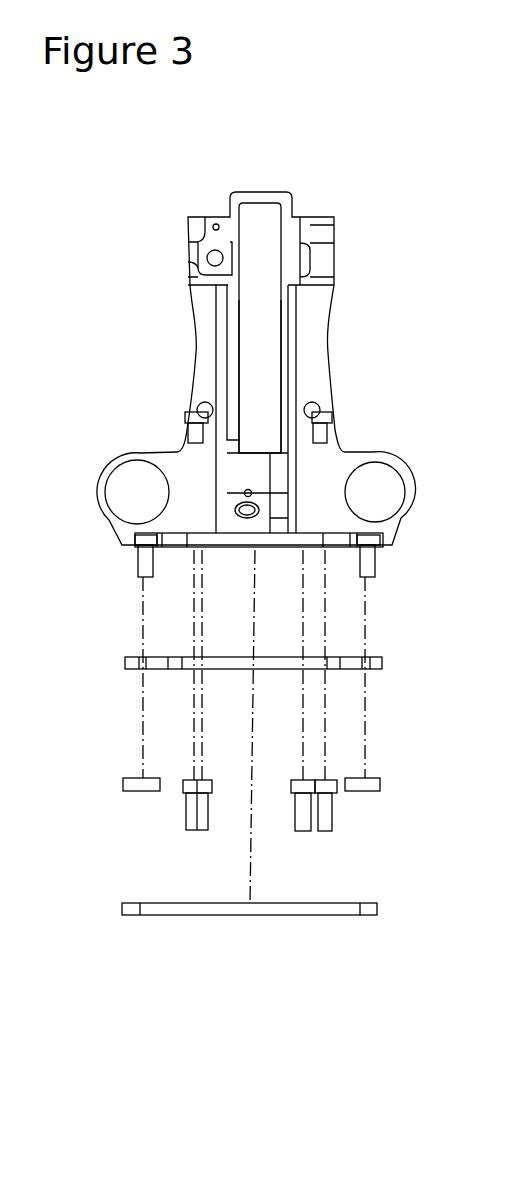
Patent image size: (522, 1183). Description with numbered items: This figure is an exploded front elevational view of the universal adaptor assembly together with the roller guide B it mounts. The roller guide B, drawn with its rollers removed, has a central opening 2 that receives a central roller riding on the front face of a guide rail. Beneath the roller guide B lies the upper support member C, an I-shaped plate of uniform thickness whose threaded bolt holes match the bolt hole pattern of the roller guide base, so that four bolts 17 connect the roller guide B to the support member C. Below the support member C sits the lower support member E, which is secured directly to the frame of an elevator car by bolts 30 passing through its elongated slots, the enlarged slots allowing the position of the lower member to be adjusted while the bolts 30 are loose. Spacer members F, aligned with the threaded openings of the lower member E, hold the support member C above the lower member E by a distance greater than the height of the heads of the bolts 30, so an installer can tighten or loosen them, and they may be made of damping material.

The central opening 2 is at (262, 238).
The bolts 17 is at (118, 567).
The bolt 30 is at (165, 836).
The roller guide B is at (358, 300).
The upper mounting or support member C is at (397, 665).
The lower mounting or support member E is at (253, 923).
The spacer member F is at (112, 787).